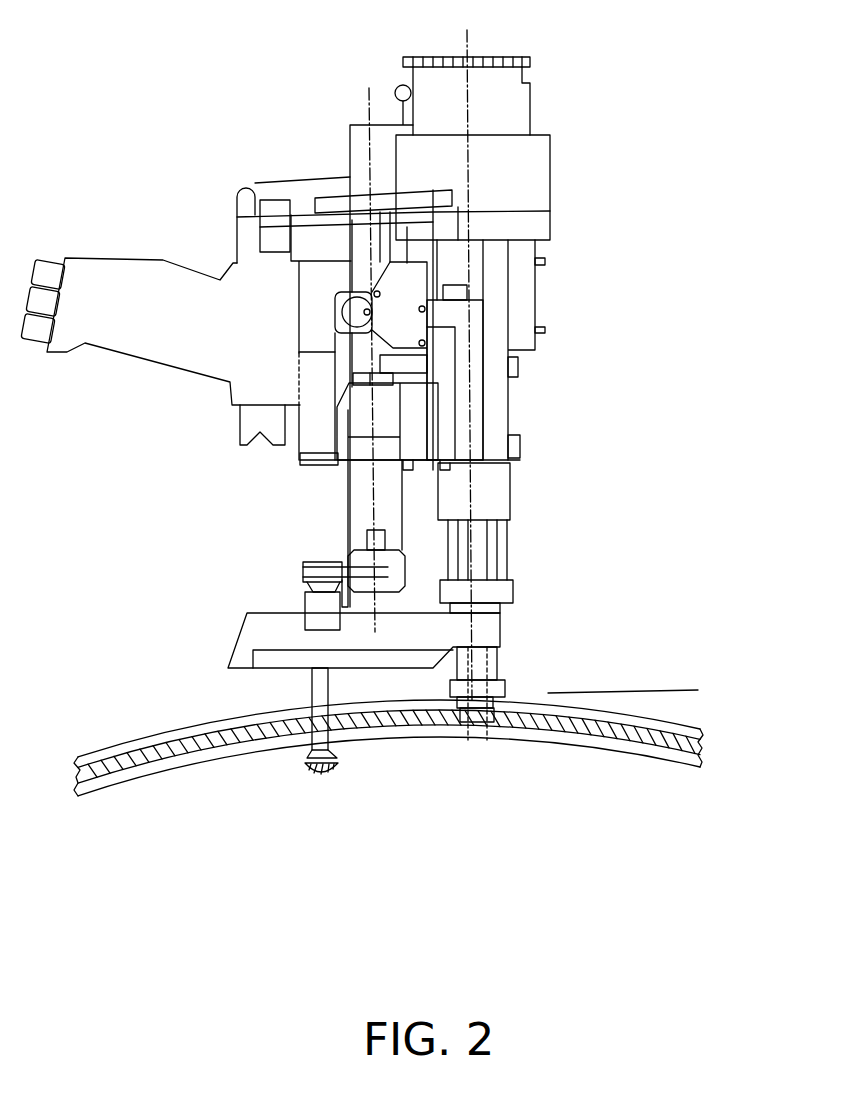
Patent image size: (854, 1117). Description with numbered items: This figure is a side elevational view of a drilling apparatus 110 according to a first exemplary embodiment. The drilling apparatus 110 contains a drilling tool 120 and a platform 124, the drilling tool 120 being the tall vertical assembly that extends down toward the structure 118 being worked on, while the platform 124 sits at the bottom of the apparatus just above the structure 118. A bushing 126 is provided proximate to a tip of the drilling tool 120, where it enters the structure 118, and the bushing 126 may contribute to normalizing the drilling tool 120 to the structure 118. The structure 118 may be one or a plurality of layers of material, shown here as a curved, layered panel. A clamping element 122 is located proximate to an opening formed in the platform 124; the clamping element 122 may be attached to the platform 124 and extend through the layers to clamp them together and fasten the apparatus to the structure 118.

The drilling apparatus 110 is at (582, 137).
The structure 118 is at (717, 718).
The drilling tool 120 is at (478, 747).
The clamping element 122 is at (323, 777).
The platform 124 is at (498, 620).
The bushing 126 is at (497, 737).